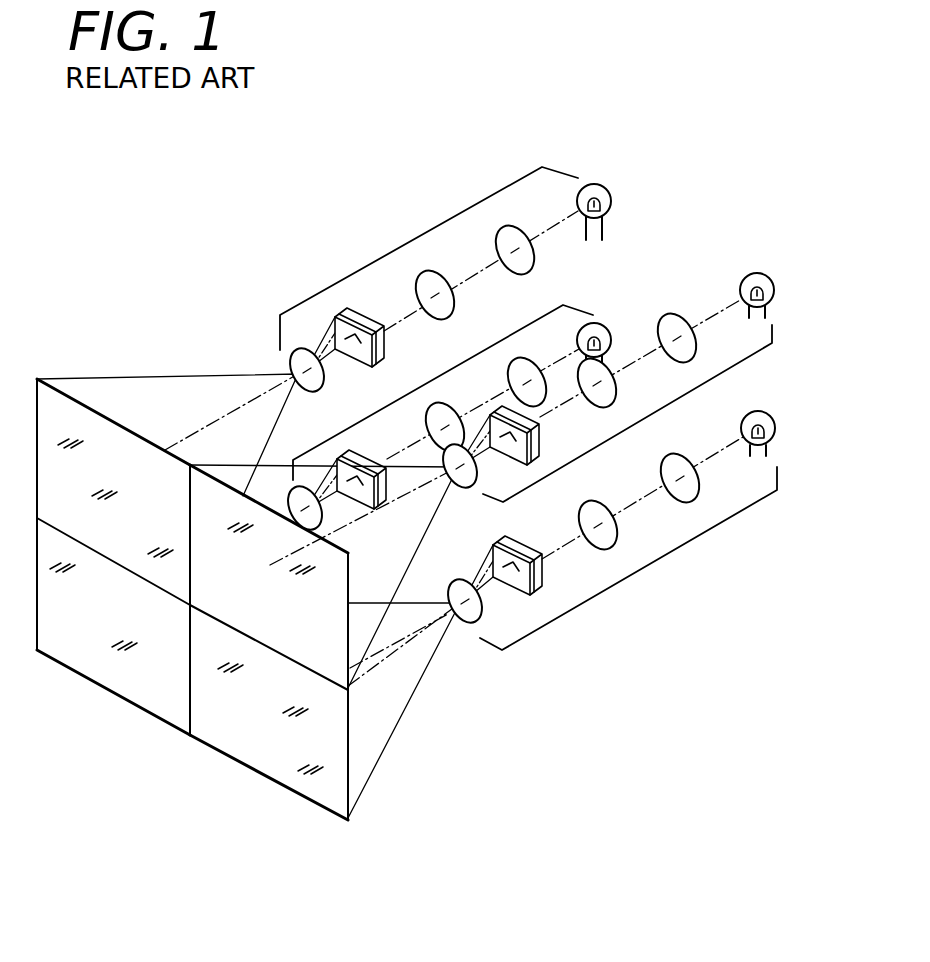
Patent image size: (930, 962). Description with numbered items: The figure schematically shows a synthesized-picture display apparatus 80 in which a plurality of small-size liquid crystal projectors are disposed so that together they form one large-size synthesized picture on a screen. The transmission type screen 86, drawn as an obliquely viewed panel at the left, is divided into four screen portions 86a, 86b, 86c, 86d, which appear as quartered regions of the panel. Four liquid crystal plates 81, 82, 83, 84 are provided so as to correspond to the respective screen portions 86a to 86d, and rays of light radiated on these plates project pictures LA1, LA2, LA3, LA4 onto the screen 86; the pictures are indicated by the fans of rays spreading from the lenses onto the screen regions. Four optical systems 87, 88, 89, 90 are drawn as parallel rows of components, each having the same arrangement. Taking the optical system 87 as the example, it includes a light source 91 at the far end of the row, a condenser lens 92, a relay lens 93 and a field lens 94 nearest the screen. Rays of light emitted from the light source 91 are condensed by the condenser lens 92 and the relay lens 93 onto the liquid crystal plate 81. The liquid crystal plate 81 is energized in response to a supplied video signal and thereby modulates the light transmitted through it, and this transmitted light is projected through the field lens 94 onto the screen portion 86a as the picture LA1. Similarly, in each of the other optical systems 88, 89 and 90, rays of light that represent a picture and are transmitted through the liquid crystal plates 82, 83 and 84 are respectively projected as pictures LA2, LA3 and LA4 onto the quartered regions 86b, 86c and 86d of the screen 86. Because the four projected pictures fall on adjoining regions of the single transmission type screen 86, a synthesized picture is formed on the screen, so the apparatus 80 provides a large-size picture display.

The synthesized-picture display apparatus 80 is at (232, 164).
The liquid crystal plate 81 is at (545, 598).
The liquid crystal plate 82 is at (545, 450).
The liquid crystal plate 83 is at (350, 312).
The liquid crystal plate 84 is at (354, 456).
The transmission type screen 86 is at (192, 564).
The screen portion 86a is at (247, 743).
The screen portion 86b is at (213, 518).
The screen portion 86c is at (65, 417).
The screen portion 86d is at (70, 652).
The optical system 87 is at (665, 557).
The optical system 88 is at (695, 392).
The optical system 89 is at (417, 238).
The optical system 90 is at (433, 383).
The light source 91 is at (762, 412).
The condenser lens 92 is at (690, 500).
The relay lens 93 is at (603, 552).
The field lens 94 is at (462, 627).
The picture LA1 is at (410, 712).
The picture LA2 is at (413, 556).
The picture LA3 is at (157, 372).
The picture LA4 is at (280, 506).